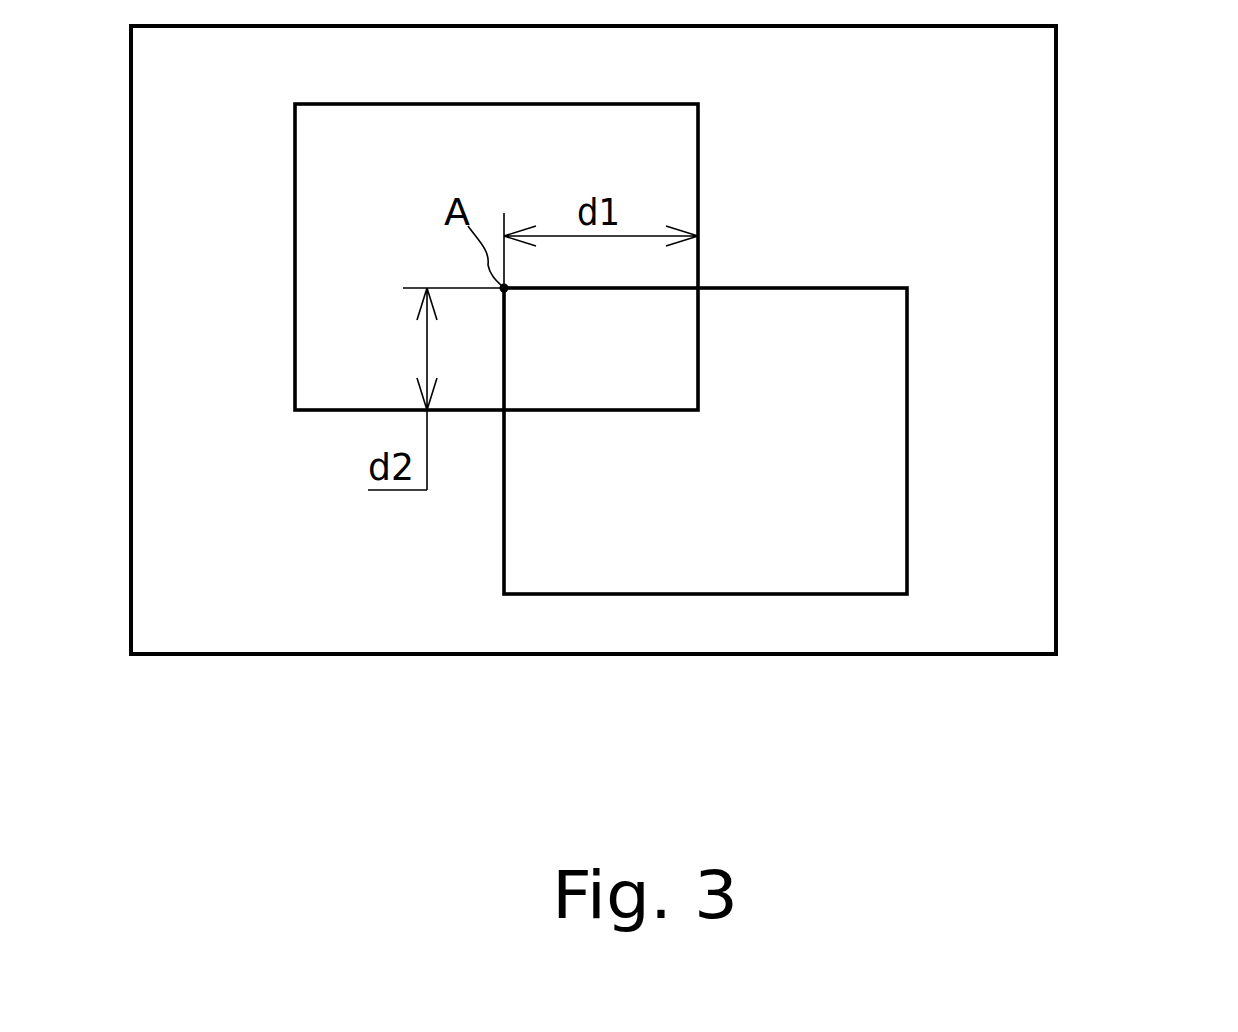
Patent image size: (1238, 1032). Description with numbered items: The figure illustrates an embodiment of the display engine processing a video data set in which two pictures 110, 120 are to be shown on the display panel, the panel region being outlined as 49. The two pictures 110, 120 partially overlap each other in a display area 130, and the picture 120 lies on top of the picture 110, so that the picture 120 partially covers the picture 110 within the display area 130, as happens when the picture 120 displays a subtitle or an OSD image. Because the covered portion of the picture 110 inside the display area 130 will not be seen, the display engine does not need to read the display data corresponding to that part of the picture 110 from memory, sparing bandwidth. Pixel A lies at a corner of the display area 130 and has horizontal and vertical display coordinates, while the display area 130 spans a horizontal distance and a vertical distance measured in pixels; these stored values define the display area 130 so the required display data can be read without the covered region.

The substrate / chip region 49 is at (1057, 112).
The picture 110 is at (295, 208).
The picture 120 is at (907, 482).
The display area 130 is at (660, 352).